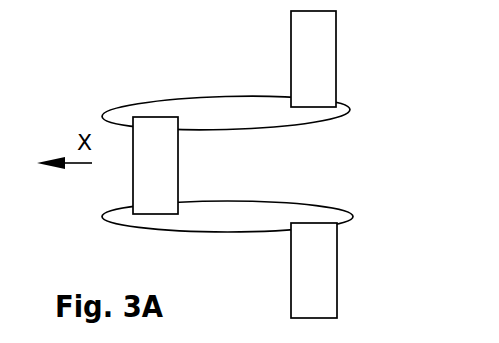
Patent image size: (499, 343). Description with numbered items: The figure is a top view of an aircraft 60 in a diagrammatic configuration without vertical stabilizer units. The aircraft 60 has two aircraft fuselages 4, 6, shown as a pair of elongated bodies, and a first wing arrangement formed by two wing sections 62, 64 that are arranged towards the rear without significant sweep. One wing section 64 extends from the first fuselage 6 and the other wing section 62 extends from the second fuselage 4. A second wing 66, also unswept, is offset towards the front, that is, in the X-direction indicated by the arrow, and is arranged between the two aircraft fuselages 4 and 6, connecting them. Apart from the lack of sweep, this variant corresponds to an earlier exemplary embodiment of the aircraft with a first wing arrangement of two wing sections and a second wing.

The aircraft 60 is at (279, 164).
The aircraft fuselage 6 is at (165, 98).
The aircraft fuselage 4 is at (215, 221).
The wing section 64 is at (302, 36).
The second wing 66 is at (169, 160).
The wing section 62 is at (302, 257).